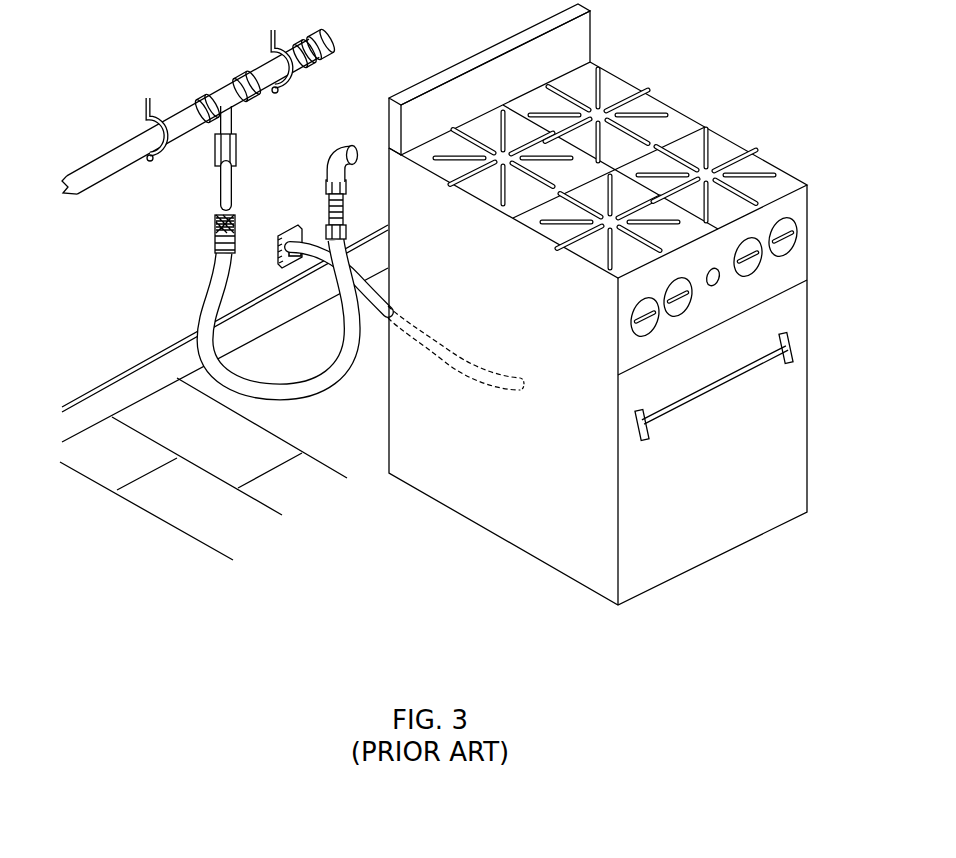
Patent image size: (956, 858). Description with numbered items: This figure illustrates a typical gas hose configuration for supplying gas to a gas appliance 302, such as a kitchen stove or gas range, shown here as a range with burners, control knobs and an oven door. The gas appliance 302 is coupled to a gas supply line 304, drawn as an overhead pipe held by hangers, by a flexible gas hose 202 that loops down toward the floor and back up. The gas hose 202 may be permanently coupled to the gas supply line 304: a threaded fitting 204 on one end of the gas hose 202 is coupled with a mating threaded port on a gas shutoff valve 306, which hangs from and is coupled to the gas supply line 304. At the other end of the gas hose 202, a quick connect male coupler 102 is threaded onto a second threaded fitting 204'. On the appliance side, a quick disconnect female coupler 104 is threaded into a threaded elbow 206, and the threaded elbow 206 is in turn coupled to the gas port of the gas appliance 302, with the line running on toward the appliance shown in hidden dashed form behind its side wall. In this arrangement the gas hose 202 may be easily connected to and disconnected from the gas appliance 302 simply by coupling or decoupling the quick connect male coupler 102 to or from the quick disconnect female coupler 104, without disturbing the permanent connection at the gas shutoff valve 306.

The gas appliance 302 is at (735, 546).
The gas supply line 304 is at (257, 60).
The gas shutoff valve 306 is at (233, 150).
The threaded fitting 204 is at (175, 258).
The gas hose 202 is at (215, 278).
The quick disconnect female coupler 104 is at (327, 200).
The threaded elbow 206 is at (357, 143).
The quick connect male coupler 102 is at (294, 227).
The second threaded fitting 204' is at (401, 307).